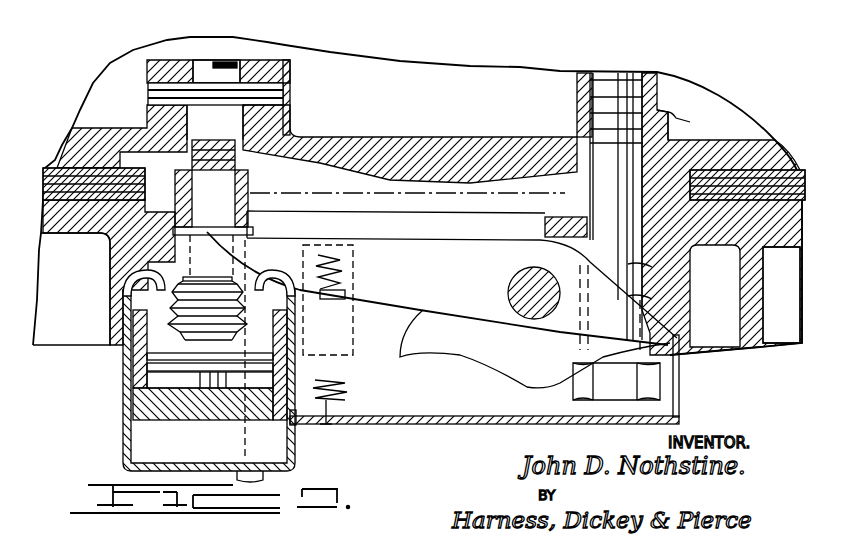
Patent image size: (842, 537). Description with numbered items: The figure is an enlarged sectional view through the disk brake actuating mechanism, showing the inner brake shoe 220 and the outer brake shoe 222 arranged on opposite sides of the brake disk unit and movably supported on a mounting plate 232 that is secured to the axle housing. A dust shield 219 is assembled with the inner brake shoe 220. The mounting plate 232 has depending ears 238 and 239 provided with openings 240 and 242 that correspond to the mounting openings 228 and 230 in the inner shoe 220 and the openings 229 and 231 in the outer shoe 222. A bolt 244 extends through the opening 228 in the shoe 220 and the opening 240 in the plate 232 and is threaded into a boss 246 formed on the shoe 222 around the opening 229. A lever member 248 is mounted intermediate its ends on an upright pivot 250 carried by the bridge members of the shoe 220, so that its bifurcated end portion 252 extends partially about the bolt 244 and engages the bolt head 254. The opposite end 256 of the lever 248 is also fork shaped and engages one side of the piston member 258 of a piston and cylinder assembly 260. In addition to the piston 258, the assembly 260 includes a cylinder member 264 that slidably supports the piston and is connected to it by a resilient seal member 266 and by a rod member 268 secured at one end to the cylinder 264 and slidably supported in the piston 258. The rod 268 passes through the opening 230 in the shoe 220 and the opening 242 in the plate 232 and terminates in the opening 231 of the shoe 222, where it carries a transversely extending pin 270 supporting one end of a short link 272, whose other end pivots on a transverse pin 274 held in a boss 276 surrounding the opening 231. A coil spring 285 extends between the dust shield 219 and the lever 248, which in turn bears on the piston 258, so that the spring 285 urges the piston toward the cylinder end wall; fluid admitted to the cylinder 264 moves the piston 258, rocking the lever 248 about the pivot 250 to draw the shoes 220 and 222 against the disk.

The dust shield 219 is at (413, 422).
The inner brake shoe 220 is at (793, 250).
The outer brake shoe 222 is at (757, 145).
The mounting opening 228 is at (640, 267).
The mounting opening 229 is at (638, 97).
The mounting opening 230 is at (112, 256).
The mounting opening 231 is at (227, 67).
The mounting plate 232 is at (413, 187).
The depending ear 238 is at (580, 165).
The depending ear 239 is at (297, 133).
The opening 240 is at (592, 180).
The opening 242 is at (282, 191).
The bolt 244 is at (640, 298).
The boss 246 is at (673, 124).
The lever member 248 is at (406, 358).
The upright pivot 250 is at (508, 290).
The bifurcated end portion 252 is at (607, 350).
The bolt head 254 is at (660, 381).
The opposite end 256 is at (133, 346).
The piston member 258 is at (287, 320).
The piston and cylinder assembly 260 is at (297, 420).
The cylinder member 264 is at (282, 370).
The resilient seal member 266 is at (292, 275).
The rod member 268 is at (240, 224).
The transversely extending pin 270 is at (233, 141).
The short link 272 is at (205, 60).
The transverse pin 274 is at (292, 92).
The boss 276 is at (286, 62).
The coil spring 285 is at (344, 390).